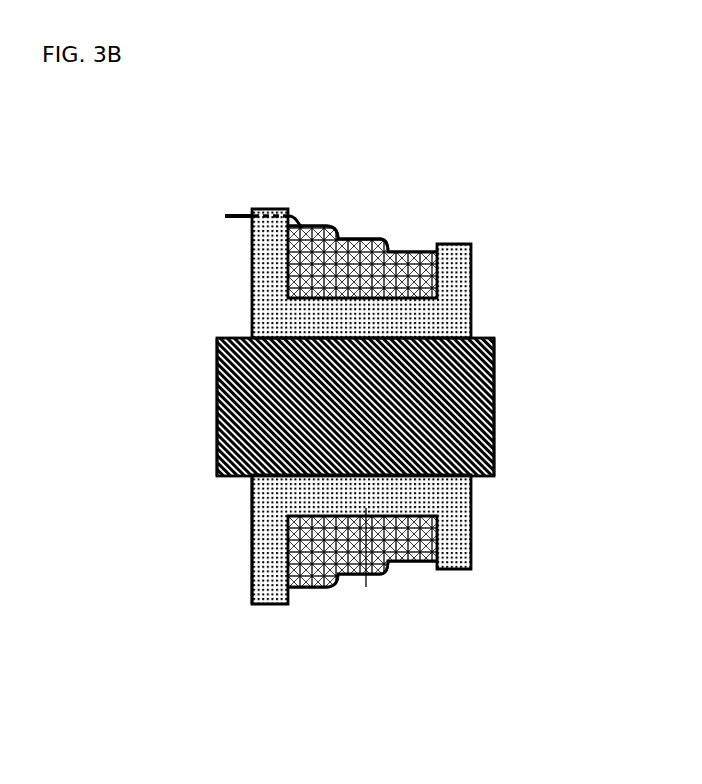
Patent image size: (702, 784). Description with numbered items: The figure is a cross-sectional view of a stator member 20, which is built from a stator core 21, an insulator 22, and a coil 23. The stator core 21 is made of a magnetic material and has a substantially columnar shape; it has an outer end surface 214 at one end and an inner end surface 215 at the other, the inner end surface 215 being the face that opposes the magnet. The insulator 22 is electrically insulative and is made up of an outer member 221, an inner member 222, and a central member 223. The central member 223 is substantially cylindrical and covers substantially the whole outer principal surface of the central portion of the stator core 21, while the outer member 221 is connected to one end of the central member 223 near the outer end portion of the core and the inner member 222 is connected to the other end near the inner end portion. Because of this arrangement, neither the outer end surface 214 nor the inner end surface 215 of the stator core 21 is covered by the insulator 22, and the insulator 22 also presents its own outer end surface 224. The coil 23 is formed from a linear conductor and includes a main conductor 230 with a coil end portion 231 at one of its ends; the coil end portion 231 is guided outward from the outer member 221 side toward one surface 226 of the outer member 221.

The stator member 20 is at (511, 116).
The stator core 21 is at (235, 362).
The outer end surface 214 is at (217, 440).
The inner end surface 215 is at (495, 408).
The insulator 22 is at (321, 590).
The outer member 221 is at (272, 588).
The inner member 222 is at (450, 553).
The central member 223 is at (366, 587).
The outer end surface 224 is at (252, 574).
The coil 23 is at (382, 158).
The main conductor 230 is at (340, 255).
The coil end portion 231 is at (299, 222).
The surface 226 is at (263, 206).